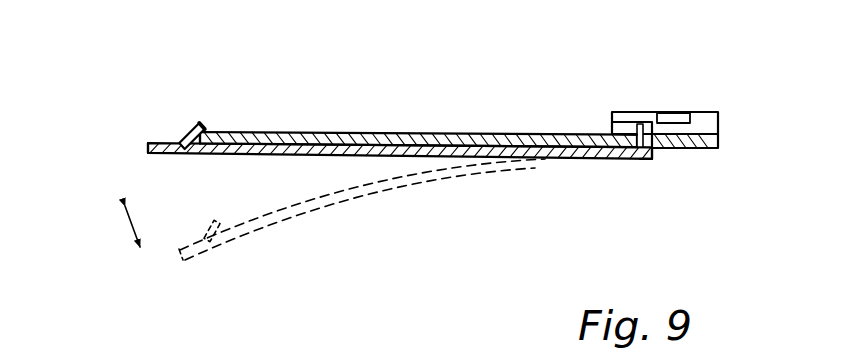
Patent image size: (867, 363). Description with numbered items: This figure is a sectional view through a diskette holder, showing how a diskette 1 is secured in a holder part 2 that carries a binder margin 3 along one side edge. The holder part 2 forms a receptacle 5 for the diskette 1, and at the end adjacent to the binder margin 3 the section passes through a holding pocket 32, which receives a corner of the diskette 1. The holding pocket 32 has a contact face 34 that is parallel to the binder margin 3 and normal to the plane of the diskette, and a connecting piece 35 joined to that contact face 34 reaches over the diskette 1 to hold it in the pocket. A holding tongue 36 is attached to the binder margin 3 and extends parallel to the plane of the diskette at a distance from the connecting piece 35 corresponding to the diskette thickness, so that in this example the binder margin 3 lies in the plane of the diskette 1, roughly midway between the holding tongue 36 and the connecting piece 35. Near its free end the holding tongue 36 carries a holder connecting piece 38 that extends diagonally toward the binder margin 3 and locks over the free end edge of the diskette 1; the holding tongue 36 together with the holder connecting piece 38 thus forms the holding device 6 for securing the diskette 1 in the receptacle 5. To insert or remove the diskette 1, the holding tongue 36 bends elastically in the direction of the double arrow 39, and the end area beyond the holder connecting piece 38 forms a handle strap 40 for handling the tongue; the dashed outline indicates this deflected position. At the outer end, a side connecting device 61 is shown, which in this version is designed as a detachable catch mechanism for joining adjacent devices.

The diskette 1 is at (370, 133).
The holder part 2 is at (625, 162).
The binder margin 3 is at (702, 152).
The receptacle 5 is at (604, 127).
The holding device 6 is at (176, 126).
The holding pocket 32 is at (643, 121).
The contact face 34 is at (648, 159).
The connecting piece 35 is at (616, 123).
The holding tongue 36 is at (305, 158).
The holder connecting piece 38 is at (190, 127).
The double arrow 39 is at (132, 227).
The handle strap 40 is at (150, 157).
The side connecting device 61 is at (711, 105).